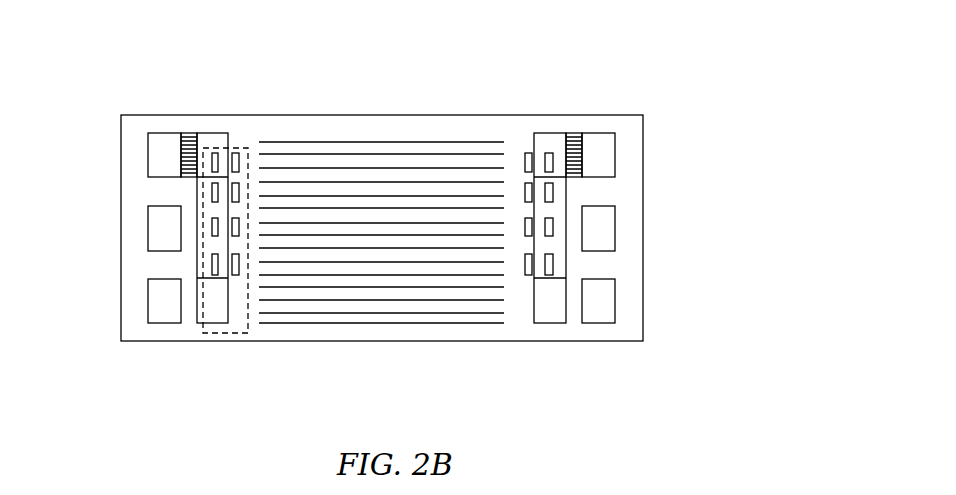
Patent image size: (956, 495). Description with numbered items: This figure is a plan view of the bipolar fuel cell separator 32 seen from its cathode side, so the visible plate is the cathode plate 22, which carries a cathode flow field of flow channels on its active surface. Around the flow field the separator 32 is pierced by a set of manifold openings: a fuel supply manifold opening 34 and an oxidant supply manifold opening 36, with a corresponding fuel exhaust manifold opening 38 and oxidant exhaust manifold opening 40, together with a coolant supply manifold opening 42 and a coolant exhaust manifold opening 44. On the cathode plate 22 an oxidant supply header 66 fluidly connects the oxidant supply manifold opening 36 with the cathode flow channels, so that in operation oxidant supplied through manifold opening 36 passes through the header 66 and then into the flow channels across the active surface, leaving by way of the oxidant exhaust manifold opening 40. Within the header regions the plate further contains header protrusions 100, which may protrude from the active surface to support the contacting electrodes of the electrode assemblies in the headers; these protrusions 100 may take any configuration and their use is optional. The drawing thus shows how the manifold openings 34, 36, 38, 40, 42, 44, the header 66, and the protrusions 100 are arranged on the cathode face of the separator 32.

The cathode plate 22 is at (504, 125).
The bipolar fuel cell separator 32 is at (678, 84).
The fuel supply manifold opening 34 is at (602, 303).
The oxidant supply manifold opening 36 is at (602, 161).
The fuel exhaust manifold opening 38 is at (158, 297).
The oxidant exhaust manifold opening 40 is at (158, 157).
The coolant supply manifold opening 42 is at (602, 231).
The coolant exhaust manifold opening 44 is at (158, 226).
The oxidant supply header 66 is at (250, 121).
The header protrusions 100 is at (238, 192).